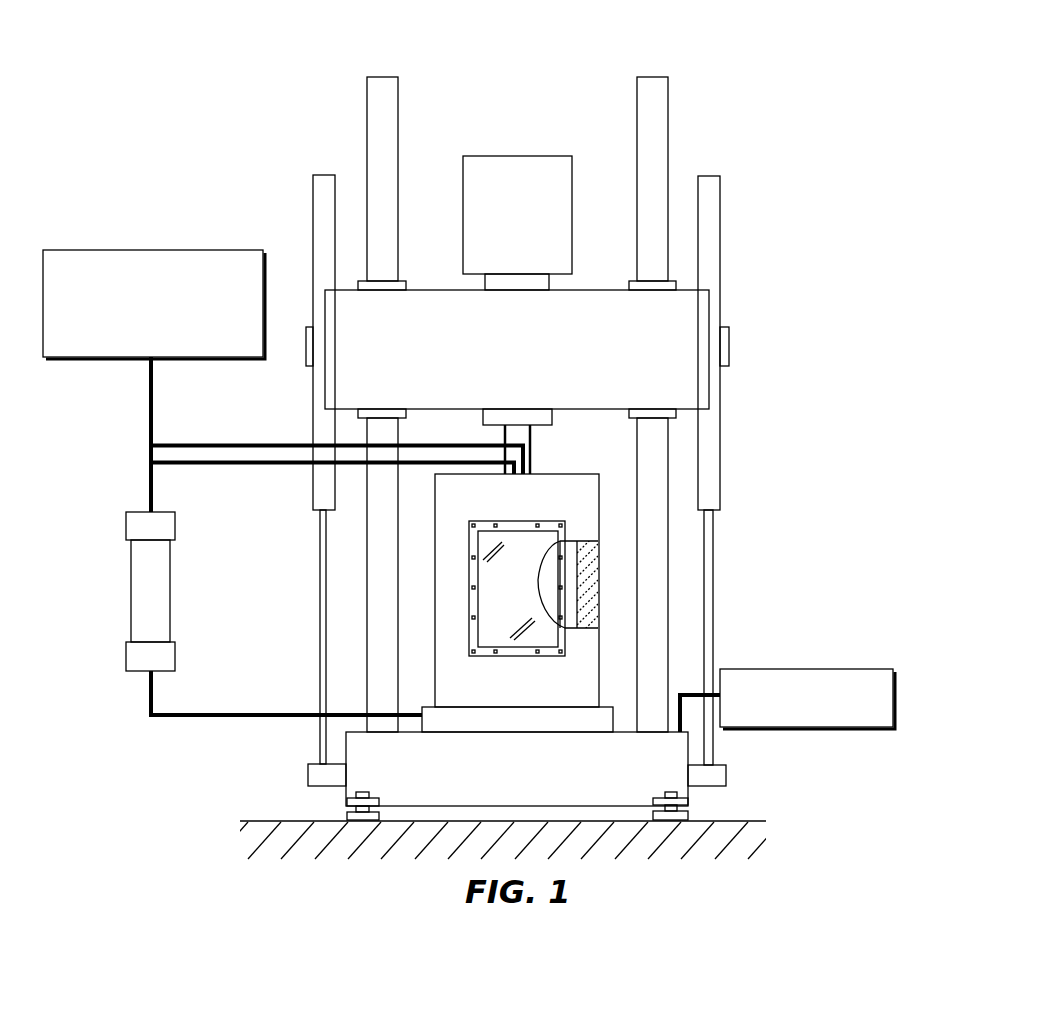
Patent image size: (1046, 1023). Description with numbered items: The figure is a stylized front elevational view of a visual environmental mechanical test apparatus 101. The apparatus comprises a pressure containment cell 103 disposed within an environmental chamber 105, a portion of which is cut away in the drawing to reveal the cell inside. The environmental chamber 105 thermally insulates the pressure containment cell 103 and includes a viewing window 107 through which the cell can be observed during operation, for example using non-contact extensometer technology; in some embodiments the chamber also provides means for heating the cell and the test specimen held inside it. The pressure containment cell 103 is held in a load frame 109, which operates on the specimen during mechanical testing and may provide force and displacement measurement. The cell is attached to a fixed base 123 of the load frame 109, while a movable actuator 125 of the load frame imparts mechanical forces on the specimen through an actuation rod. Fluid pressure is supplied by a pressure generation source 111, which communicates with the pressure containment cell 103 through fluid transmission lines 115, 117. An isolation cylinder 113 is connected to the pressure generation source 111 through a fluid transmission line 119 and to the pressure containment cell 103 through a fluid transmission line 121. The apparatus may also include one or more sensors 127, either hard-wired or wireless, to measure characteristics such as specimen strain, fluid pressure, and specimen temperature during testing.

The visual environmental mechanical test apparatus 101 is at (717, 116).
The pressure containment cell 103 is at (553, 573).
The environmental chamber 105 is at (591, 506).
The viewing window 107 is at (529, 597).
The load frame 109 is at (727, 228).
The pressure generation source 111 is at (130, 250).
The isolation cylinder 113 is at (130, 530).
The fluid transmission line 115 is at (282, 445).
The fluid transmission line 117 is at (286, 465).
The fluid transmission line 119 is at (148, 476).
The fluid transmission line 121 is at (185, 718).
The fixed base 123 is at (365, 755).
The movable actuator 125 is at (528, 436).
The sensors 127 is at (872, 720).